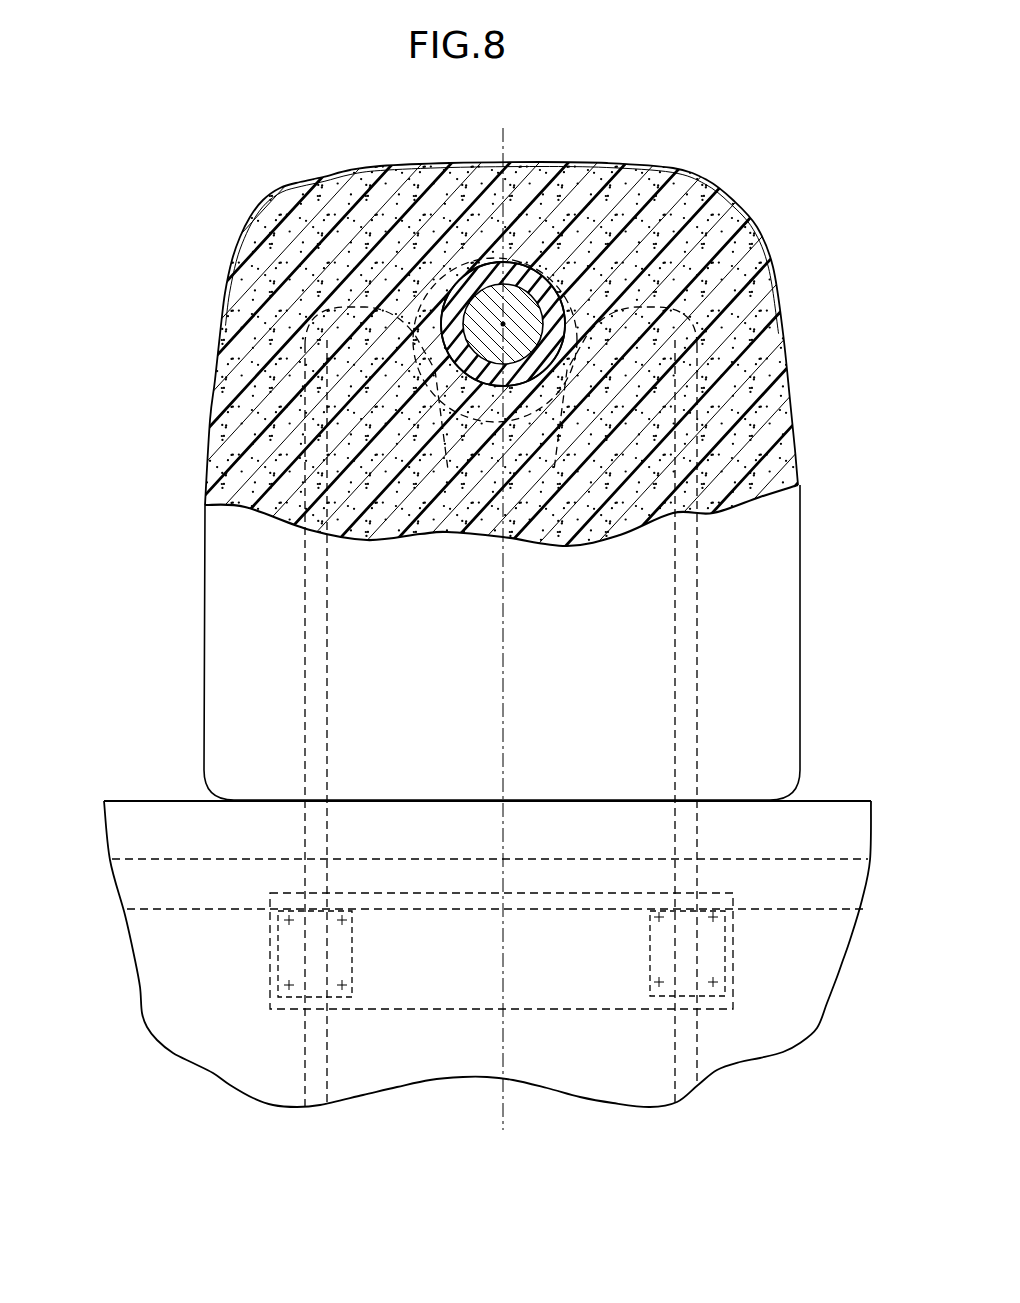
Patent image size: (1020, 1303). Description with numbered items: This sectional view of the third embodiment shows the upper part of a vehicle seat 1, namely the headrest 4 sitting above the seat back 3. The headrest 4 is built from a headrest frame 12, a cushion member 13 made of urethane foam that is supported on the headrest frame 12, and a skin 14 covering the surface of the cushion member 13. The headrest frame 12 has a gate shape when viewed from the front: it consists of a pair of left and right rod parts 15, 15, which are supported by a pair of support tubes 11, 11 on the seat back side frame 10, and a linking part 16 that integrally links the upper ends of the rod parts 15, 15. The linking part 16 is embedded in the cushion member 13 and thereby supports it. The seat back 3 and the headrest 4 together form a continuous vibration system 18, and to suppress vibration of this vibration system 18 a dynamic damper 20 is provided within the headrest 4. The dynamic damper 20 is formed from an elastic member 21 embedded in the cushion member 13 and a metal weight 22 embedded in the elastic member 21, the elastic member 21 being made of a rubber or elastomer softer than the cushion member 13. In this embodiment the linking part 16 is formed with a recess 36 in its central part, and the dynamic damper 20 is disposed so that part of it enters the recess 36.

The vehicle seat 1 is at (176, 330).
The seat back 3 is at (156, 796).
The headrest 4 is at (201, 556).
The cushion frame 10 is at (557, 865).
The support tube 11 is at (332, 952).
The headrest frame 12 is at (698, 570).
The cushion member 13 is at (322, 197).
The skin 14 is at (383, 167).
The rod part 15 is at (322, 684).
The linking part 16 is at (613, 470).
The vibration system 18 is at (81, 583).
The dynamic damper 20 is at (450, 140).
The elastic member 21 is at (517, 267).
The weight 22 is at (488, 308).
The recess 36 is at (468, 468).